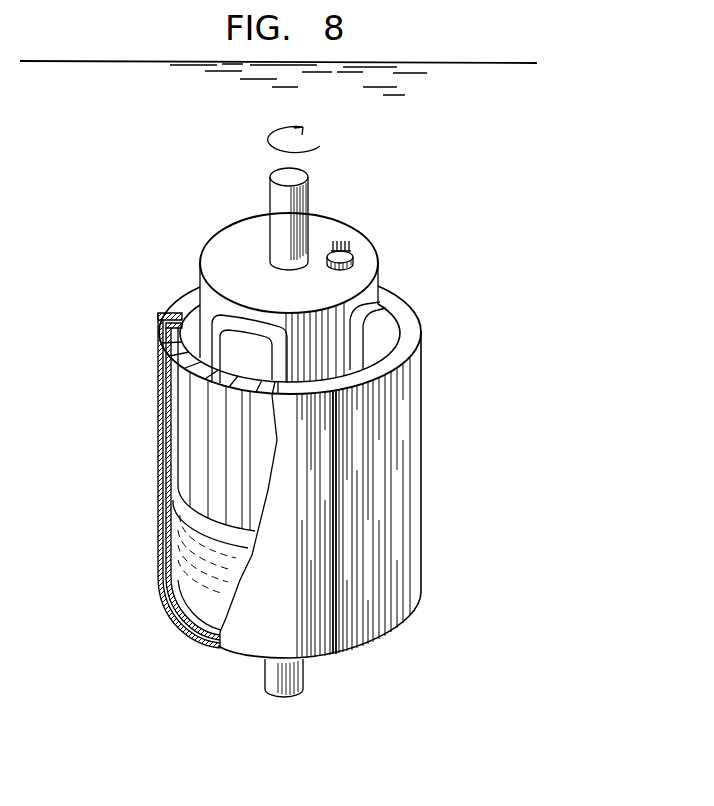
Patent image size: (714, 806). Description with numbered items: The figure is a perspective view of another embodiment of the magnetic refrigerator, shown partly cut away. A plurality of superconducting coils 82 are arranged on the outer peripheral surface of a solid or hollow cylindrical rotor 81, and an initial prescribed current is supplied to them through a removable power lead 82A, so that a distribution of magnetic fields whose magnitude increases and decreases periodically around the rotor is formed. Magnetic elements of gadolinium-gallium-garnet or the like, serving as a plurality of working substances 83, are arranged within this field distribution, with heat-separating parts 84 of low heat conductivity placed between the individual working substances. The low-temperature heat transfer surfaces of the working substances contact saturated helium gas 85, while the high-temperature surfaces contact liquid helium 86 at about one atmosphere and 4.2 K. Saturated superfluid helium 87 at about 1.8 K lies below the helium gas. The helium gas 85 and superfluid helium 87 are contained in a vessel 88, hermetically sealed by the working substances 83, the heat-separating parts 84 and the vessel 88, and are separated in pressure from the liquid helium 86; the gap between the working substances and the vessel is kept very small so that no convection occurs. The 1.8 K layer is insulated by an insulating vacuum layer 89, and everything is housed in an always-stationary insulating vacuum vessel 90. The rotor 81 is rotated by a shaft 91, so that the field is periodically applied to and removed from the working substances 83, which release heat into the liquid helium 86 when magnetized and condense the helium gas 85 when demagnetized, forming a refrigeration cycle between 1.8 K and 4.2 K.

The rotor 81 is at (215, 248).
The superconducting coils 82 is at (217, 310).
The removable power lead 82A is at (355, 257).
The working substances 83 is at (187, 437).
The heat-separating parts 84 is at (198, 423).
The saturated helium gas 85 is at (178, 493).
The liquid helium 86 is at (162, 162).
The saturated superfluid helium 87 is at (178, 577).
The vessel 88 is at (167, 458).
The insulating vacuum layer 89 is at (172, 602).
The insulating vacuum vessel 90 is at (403, 470).
The shaft 91 is at (308, 192).